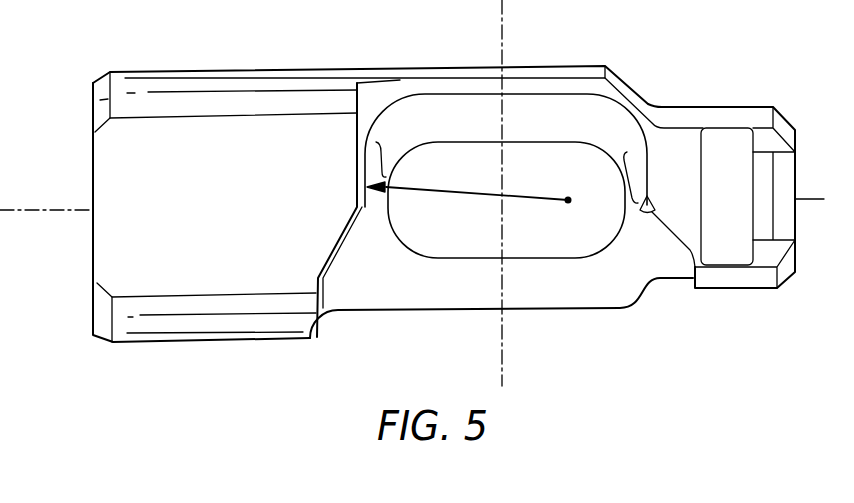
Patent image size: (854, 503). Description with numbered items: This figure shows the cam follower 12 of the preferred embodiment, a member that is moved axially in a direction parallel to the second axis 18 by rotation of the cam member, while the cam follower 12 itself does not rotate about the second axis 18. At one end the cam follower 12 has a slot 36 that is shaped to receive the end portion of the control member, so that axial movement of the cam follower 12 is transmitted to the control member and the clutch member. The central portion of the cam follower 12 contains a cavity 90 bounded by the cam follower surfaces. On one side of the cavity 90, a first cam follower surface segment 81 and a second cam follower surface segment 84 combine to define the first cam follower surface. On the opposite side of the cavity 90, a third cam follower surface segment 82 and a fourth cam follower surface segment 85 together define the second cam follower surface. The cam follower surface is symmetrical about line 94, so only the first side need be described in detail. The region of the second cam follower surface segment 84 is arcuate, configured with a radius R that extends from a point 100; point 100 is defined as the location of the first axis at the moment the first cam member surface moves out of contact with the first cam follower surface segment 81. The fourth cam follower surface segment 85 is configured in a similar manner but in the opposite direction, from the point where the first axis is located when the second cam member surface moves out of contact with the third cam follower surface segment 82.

The cam follower 12 is at (697, 70).
The second axis 18 is at (43, 212).
The slot 36 is at (727, 140).
The first cam follower surface segment 81 is at (367, 211).
The third cam follower surface segment 82 is at (657, 211).
The second cam follower surface segment 84 is at (397, 184).
The fourth cam follower surface segment 85 is at (620, 180).
The cavity 90 is at (458, 115).
The line 94 is at (503, 347).
The point 100 is at (567, 204).
The radius R is at (460, 194).